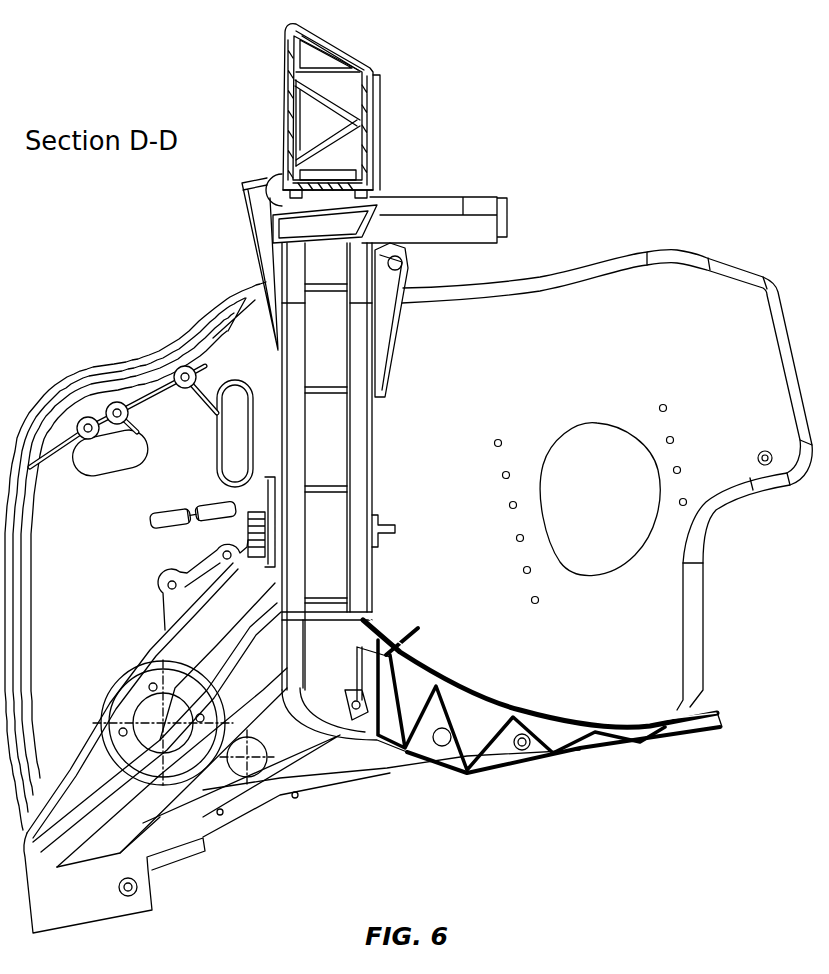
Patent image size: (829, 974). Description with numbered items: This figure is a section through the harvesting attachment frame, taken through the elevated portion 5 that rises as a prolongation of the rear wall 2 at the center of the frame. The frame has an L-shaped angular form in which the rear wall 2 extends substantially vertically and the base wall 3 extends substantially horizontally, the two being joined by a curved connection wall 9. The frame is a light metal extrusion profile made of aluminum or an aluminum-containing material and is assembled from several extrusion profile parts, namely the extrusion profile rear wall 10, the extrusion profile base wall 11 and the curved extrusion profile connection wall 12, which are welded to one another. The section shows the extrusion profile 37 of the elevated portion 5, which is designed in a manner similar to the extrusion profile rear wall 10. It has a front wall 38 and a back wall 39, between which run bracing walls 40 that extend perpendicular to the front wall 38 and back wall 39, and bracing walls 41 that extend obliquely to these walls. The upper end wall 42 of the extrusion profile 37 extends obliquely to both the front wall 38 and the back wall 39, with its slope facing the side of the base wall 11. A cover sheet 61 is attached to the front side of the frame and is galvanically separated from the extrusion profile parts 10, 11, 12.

The rear wall 2 is at (424, 408).
The base wall 3 is at (555, 788).
The elevated portion 5 is at (250, 57).
The connection wall 9 is at (413, 590).
The extrusion profile rear wall 10 is at (333, 462).
The extrusion profile base wall 11 is at (473, 753).
The extrusion profile connection wall 12 is at (312, 700).
The extrusion profile 37 is at (300, 142).
The front wall 38 is at (367, 148).
The back wall 39 is at (287, 113).
The bracing walls 40 is at (338, 67).
The bracing walls 41 is at (330, 104).
The upper end wall 42 is at (327, 66).
The cover sheet 61 is at (488, 693).